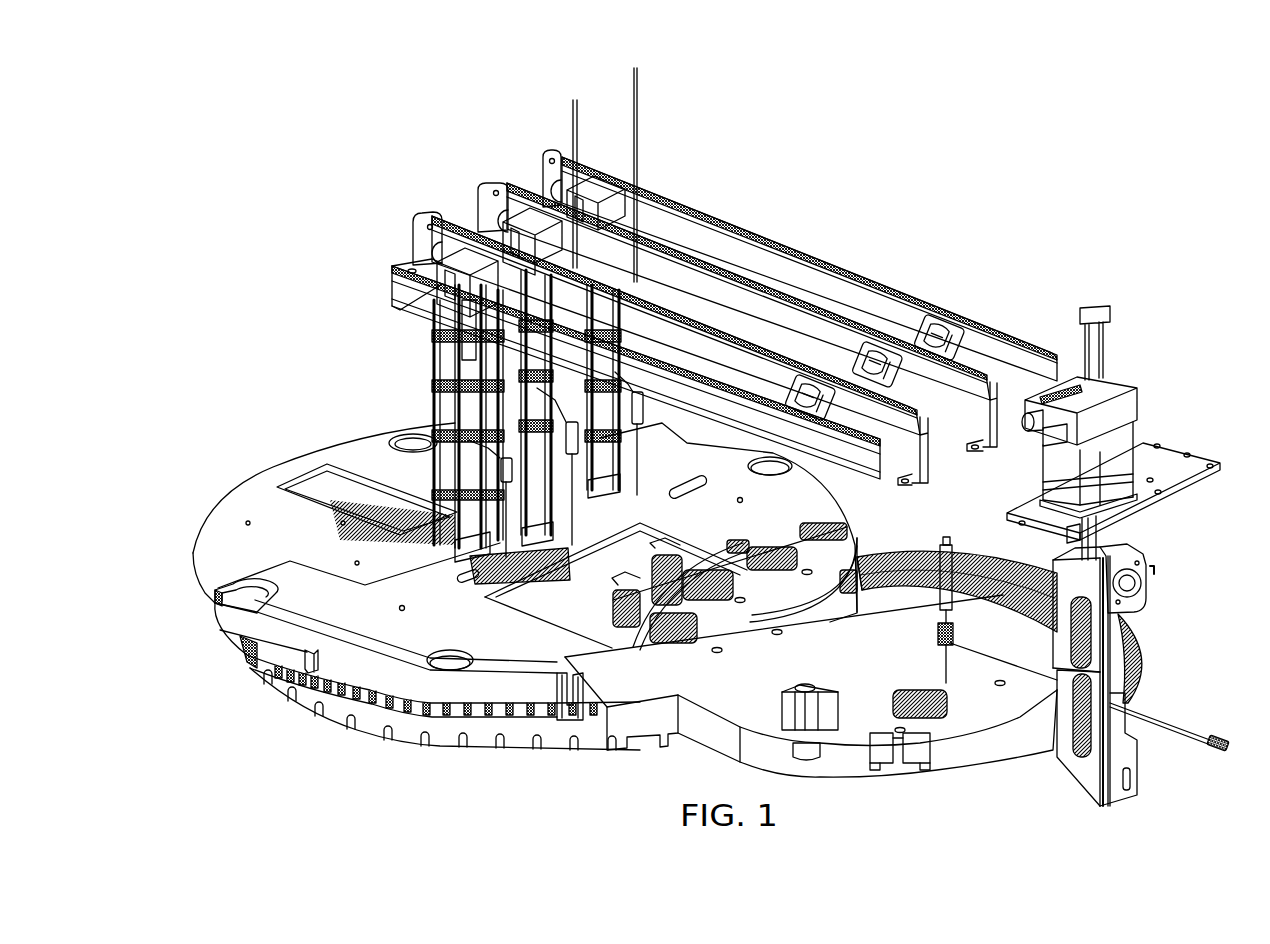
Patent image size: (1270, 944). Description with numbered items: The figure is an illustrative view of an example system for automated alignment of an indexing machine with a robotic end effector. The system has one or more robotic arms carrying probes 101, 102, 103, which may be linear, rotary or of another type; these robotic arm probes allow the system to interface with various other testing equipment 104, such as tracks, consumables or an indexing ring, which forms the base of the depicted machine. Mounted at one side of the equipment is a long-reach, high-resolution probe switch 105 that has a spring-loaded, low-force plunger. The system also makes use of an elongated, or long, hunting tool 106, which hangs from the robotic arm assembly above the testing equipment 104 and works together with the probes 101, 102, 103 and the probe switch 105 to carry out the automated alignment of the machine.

The robotic arm probe 101 is at (846, 270).
The robotic arm probe 102 is at (484, 184).
The robotic arm probe 103 is at (418, 214).
The testing equipment 104 is at (303, 412).
The probe switch 105 is at (1122, 582).
The hunting tool 106 is at (483, 463).